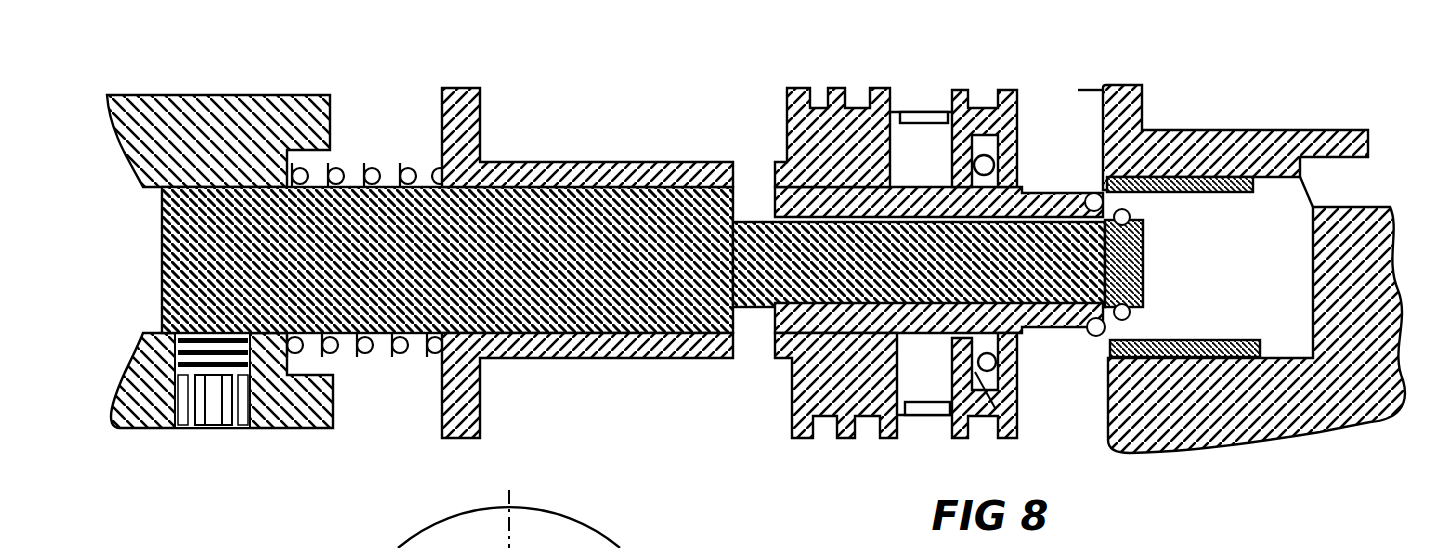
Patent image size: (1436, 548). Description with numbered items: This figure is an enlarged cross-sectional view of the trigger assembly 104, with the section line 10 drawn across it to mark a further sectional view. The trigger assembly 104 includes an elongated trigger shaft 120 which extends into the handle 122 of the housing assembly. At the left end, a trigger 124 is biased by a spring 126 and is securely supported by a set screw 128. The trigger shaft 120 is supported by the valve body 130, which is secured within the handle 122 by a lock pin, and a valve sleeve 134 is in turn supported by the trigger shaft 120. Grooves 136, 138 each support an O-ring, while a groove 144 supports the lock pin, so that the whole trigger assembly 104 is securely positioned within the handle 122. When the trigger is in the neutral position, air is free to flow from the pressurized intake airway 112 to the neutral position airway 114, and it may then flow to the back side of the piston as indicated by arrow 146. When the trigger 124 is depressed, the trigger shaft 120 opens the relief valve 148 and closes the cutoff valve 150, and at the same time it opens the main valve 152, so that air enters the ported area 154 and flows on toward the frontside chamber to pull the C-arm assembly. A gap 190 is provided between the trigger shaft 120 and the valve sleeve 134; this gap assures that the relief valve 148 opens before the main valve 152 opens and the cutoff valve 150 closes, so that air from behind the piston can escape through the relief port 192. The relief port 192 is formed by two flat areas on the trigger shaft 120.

The section line 10 is at (760, 505).
The trigger assembly 104 is at (322, 448).
The pressurized intake airway 112 is at (939, 289).
The neutral position airway 114 is at (1183, 267).
The trigger shaft 120 is at (572, 340).
The handle 122 is at (1275, 445).
The trigger 124 is at (203, 92).
The spring 126 is at (388, 363).
The set screw 128 is at (180, 430).
The valve body 130 is at (885, 108).
The valve sleeve 134 is at (925, 412).
The groove 136 is at (815, 98).
The groove 138 is at (978, 97).
The groove 144 is at (865, 437).
The arrow 146 is at (1343, 180).
The relief valve 148 is at (1133, 318).
The cutoff valve 150 is at (1095, 345).
The main valve 152 is at (1007, 377).
The ported area 154 is at (920, 112).
The gap 190 is at (722, 348).
The relief port 192 is at (1040, 225).